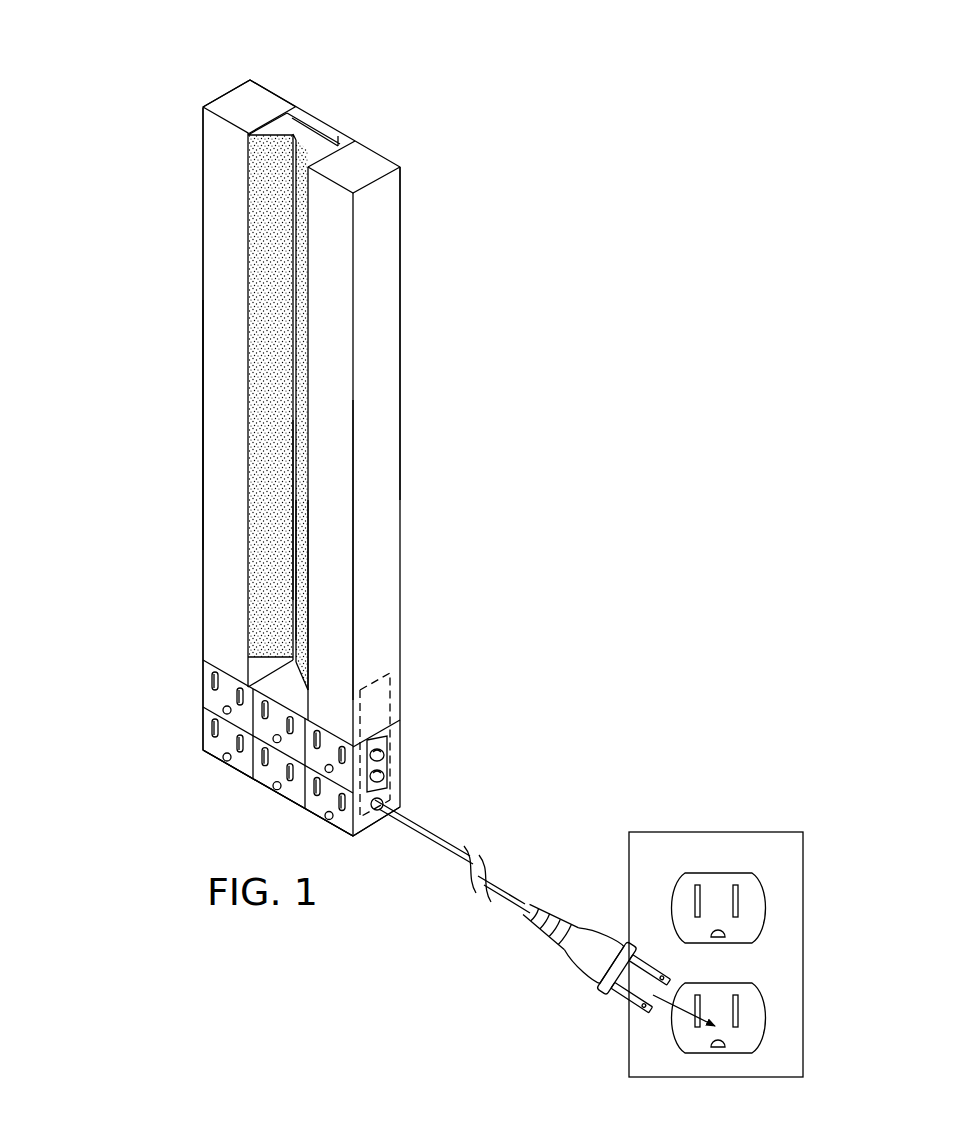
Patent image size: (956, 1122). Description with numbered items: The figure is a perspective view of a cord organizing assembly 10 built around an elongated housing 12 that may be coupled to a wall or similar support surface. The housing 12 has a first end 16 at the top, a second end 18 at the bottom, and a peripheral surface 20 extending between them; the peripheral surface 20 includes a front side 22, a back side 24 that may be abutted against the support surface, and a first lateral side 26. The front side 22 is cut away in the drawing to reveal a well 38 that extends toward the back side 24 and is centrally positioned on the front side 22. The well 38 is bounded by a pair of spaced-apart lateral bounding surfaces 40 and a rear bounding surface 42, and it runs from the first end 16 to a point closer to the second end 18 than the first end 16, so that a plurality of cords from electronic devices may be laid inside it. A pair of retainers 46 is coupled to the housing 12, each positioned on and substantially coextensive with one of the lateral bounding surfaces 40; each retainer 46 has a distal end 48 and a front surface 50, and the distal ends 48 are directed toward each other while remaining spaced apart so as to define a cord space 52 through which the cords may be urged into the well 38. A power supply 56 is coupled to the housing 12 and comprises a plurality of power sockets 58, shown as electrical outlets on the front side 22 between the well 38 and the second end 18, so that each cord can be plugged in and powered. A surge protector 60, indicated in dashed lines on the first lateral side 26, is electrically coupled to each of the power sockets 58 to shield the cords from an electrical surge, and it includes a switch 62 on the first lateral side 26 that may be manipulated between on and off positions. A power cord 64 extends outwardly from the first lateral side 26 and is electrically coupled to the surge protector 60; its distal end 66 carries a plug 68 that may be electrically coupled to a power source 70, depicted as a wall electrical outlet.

The cord organizing assembly 10 is at (430, 115).
The housing 12 is at (400, 170).
The first end 16 is at (248, 92).
The second end 18 is at (370, 836).
The peripheral surface 20 is at (222, 332).
The front side 22 is at (210, 431).
The back side 24 is at (400, 378).
The first lateral side 26 is at (388, 528).
The well 38 is at (281, 205).
The lateral bounding surfaces 40 is at (343, 133).
The rear bounding surface 42 is at (306, 134).
The retainers 46 is at (258, 573).
The distal end 48 is at (293, 577).
The front surface 50 is at (268, 490).
The cord space 52 is at (288, 603).
The power supply 56 is at (194, 728).
The power sockets 58 is at (211, 725).
The surge protector 60 is at (375, 676).
The switch 62 is at (390, 750).
The power cord 64 is at (470, 858).
The distal end 66 is at (548, 924).
The plug 68 is at (615, 967).
The power source 70 is at (712, 832).